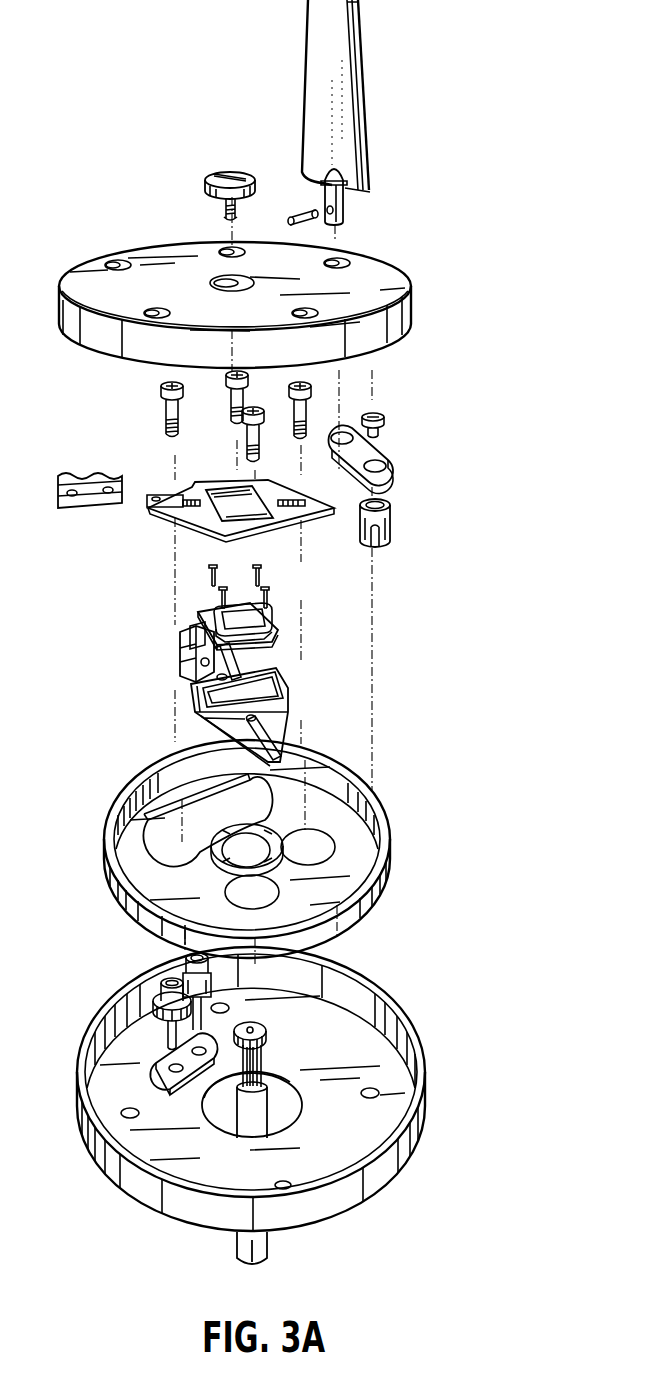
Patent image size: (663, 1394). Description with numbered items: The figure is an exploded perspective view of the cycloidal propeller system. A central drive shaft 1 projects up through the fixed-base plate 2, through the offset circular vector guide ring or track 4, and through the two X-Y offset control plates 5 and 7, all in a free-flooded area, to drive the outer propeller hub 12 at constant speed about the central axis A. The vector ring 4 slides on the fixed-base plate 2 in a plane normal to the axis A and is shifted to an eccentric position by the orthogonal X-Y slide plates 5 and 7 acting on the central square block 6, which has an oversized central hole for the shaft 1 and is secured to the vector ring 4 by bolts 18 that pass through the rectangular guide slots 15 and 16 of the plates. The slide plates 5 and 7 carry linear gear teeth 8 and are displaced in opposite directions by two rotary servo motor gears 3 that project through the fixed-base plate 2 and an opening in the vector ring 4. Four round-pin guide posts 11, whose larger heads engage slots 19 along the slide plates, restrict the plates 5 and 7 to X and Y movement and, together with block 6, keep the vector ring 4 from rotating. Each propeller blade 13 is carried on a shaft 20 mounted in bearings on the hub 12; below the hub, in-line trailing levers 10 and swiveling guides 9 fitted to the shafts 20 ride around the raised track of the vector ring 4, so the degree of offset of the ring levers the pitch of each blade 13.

The central drive shaft 1 is at (303, 1112).
The fixed-base plate 2 is at (407, 1012).
The rotary servo motor gears 3 is at (160, 990).
The offset circular vector guide ring 4 is at (392, 838).
The X slide plate 5 is at (290, 709).
The central square block 6 is at (278, 630).
The Y slide plate 7 is at (283, 513).
The linear gear teeth 8 is at (190, 627).
The swiveling guides 9 is at (387, 514).
The in-line trailing levers 10 is at (374, 449).
The round-pin guide posts 11 is at (302, 392).
The outer propeller hub 12 is at (373, 267).
The propeller blade 13 is at (352, 50).
The rectangular guide slot 15 is at (203, 696).
The rectangular guide slot 16 is at (244, 500).
The bolts 18 is at (263, 573).
The slots 19 is at (190, 500).
The shafts 20 is at (344, 212).
The central axis A is at (231, 228).